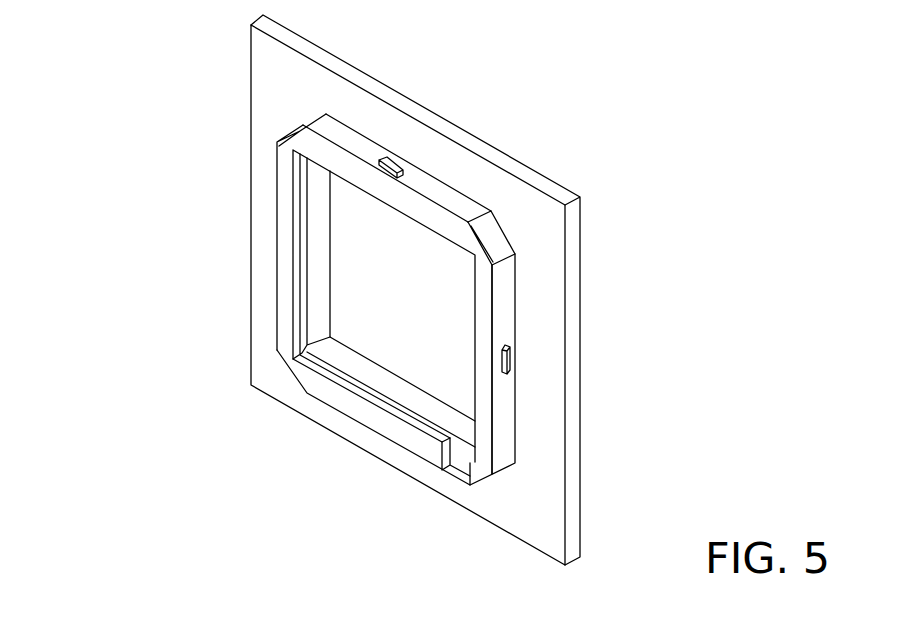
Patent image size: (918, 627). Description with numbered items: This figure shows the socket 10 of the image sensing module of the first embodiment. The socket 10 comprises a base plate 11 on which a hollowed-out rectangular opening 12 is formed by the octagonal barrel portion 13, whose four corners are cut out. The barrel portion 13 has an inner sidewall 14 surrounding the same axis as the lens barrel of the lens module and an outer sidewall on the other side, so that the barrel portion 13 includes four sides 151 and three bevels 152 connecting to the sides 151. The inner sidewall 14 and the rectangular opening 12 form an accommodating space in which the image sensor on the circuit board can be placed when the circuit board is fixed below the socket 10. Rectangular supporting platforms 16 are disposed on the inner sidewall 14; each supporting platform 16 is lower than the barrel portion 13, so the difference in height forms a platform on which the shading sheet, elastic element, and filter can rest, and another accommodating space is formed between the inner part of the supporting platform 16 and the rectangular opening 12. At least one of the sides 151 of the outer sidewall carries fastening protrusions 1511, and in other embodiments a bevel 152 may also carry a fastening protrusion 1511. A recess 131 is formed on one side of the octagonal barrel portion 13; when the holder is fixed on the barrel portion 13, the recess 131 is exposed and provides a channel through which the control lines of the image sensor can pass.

The socket 10 is at (62, 30).
The base plate 11 is at (453, 185).
The rectangular opening 12 is at (355, 312).
The barrel portion 13 is at (312, 152).
The inner sidewall 14 is at (277, 202).
The supporting platform 16 is at (313, 257).
The recess 131 is at (462, 467).
The side 151 is at (502, 432).
The bevel 152 is at (503, 236).
The fastening protrusion 1511 is at (388, 162).